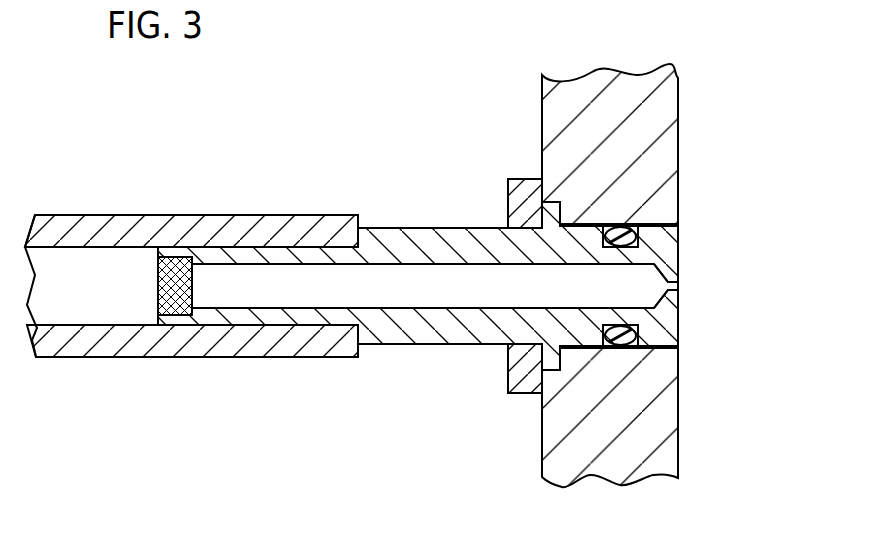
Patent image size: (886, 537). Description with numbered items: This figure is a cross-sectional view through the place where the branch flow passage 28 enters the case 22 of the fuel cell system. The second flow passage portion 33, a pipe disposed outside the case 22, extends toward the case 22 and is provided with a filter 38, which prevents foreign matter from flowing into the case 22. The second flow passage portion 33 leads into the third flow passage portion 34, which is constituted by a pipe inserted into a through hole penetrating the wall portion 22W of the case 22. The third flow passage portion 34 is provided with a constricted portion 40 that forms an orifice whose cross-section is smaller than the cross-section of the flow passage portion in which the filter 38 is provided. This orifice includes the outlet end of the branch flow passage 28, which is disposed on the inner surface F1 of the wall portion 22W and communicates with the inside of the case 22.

The case 22 is at (698, 395).
The wall portion 22W is at (635, 97).
The branch flow passage 28 is at (158, 360).
The second flow passage portion 33 is at (292, 215).
The third flow passage portion 34 is at (588, 222).
The filter 38 is at (170, 288).
The constricted portion 40 is at (675, 284).
The inner surface F1 is at (680, 137).